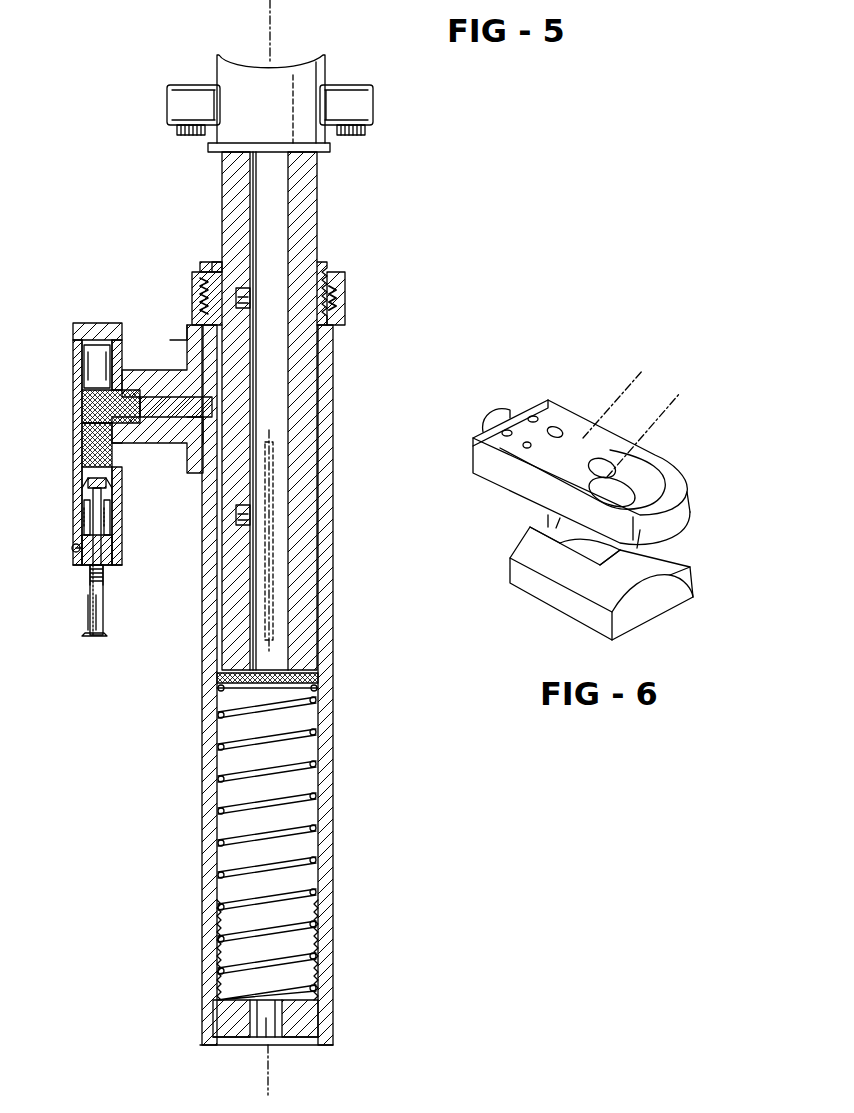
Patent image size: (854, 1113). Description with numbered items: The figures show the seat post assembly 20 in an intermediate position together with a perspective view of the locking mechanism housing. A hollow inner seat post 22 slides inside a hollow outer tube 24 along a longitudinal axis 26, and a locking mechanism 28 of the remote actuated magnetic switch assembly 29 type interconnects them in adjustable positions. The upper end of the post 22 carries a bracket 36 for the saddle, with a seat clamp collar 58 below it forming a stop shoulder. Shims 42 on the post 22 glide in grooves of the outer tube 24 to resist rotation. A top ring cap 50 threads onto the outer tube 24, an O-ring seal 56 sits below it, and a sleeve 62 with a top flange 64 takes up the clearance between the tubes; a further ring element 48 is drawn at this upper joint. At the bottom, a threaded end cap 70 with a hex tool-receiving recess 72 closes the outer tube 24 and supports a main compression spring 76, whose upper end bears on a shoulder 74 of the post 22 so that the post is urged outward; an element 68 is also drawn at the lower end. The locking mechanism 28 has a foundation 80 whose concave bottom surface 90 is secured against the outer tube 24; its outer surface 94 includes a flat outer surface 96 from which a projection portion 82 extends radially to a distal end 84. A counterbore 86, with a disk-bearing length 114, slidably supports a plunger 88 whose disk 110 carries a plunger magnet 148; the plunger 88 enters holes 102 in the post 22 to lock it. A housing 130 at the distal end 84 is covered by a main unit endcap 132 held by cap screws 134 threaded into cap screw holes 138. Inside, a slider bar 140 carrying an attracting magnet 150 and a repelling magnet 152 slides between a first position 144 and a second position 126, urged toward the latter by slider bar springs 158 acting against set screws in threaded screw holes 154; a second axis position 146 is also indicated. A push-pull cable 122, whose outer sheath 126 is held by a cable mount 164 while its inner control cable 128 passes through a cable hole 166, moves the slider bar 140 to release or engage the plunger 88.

In FIG. 5, the seat post assembly 20 is at (448, 172).
In FIG. 5, the inner seat post 22 is at (318, 195).
In FIG. 5, the outer tube 24 is at (334, 882).
In FIG. 5, the longitudinal axis 26 is at (262, 33).
In FIG. 5, the locking mechanism 28 is at (105, 252).
In FIG. 5, the remote actuated magnetic switch assembly 29 is at (124, 428).
In FIG. 5, the bracket 36 is at (327, 68).
In FIG. 5, the shims 42 is at (276, 470).
In FIG. 5, the collar 48 is at (197, 300).
In FIG. 5, the top ring cap 50 is at (345, 275).
In FIG. 5, the O-ring seal 56 is at (323, 268).
In FIG. 5, the seat clamp collar 58 is at (333, 152).
In FIG. 5, the sleeve 62 is at (340, 298).
In FIG. 5, the top flange 64 is at (200, 275).
In FIG. 5, the bottom plate 68 is at (320, 1040).
In FIG. 5, the end cap 70 is at (312, 1023).
In FIG. 5, the tool-receiving recess 72 is at (278, 1037).
In FIG. 5, the shoulder 74 is at (320, 679).
In FIG. 5, the main compression spring 76 is at (300, 772).
In FIG. 5, the foundation 80 is at (188, 345).
In FIG. 6, the foundation 80 is at (528, 548).
In FIG. 5, the projection portion 82 is at (116, 365).
In FIG. 6, the projection portion 82 is at (650, 555).
In FIG. 6, the distal end 84 is at (602, 470).
In FIG. 5, the counterbore 86 is at (150, 385).
In FIG. 6, the counterbore 86 is at (620, 488).
In FIG. 5, the plunger 88 is at (192, 425).
In FIG. 6, the bottom surface 90 is at (688, 590).
In FIG. 6, the outer surface 94 is at (612, 600).
In FIG. 6, the flat outer surface 96 is at (668, 572).
In FIG. 5, the holes 102 is at (240, 295).
In FIG. 5, the disk 110 is at (142, 405).
In FIG. 5, the disk-bearing length 114 is at (82, 398).
In FIG. 5, the push-pull cable 122 is at (106, 612).
In FIG. 5, the outer sheath 126 is at (108, 635).
In FIG. 5, the inner control cable 128 is at (88, 625).
In FIG. 5, the housing 130 is at (108, 588).
In FIG. 5, the main unit endcap 132 is at (80, 500).
In FIG. 5, the cap screws 134 is at (76, 558).
In FIG. 6, the cap screw holes 138 is at (503, 432).
In FIG. 5, the slider bar 140 is at (100, 345).
In FIG. 6, the first position 144 is at (612, 372).
In FIG. 6, the axis 146 is at (683, 390).
In FIG. 5, the plunger magnet 148 is at (82, 430).
In FIG. 5, the attracting magnet 150 is at (82, 412).
In FIG. 5, the repelling magnet 152 is at (80, 470).
In FIG. 6, the threaded screw holes 154 is at (563, 432).
In FIG. 5, the slider bar springs 158 is at (110, 520).
In FIG. 5, the cable mount 164 is at (86, 582).
In FIG. 6, the cable mount 164 is at (498, 418).
In FIG. 6, the cable hole 166 is at (524, 448).